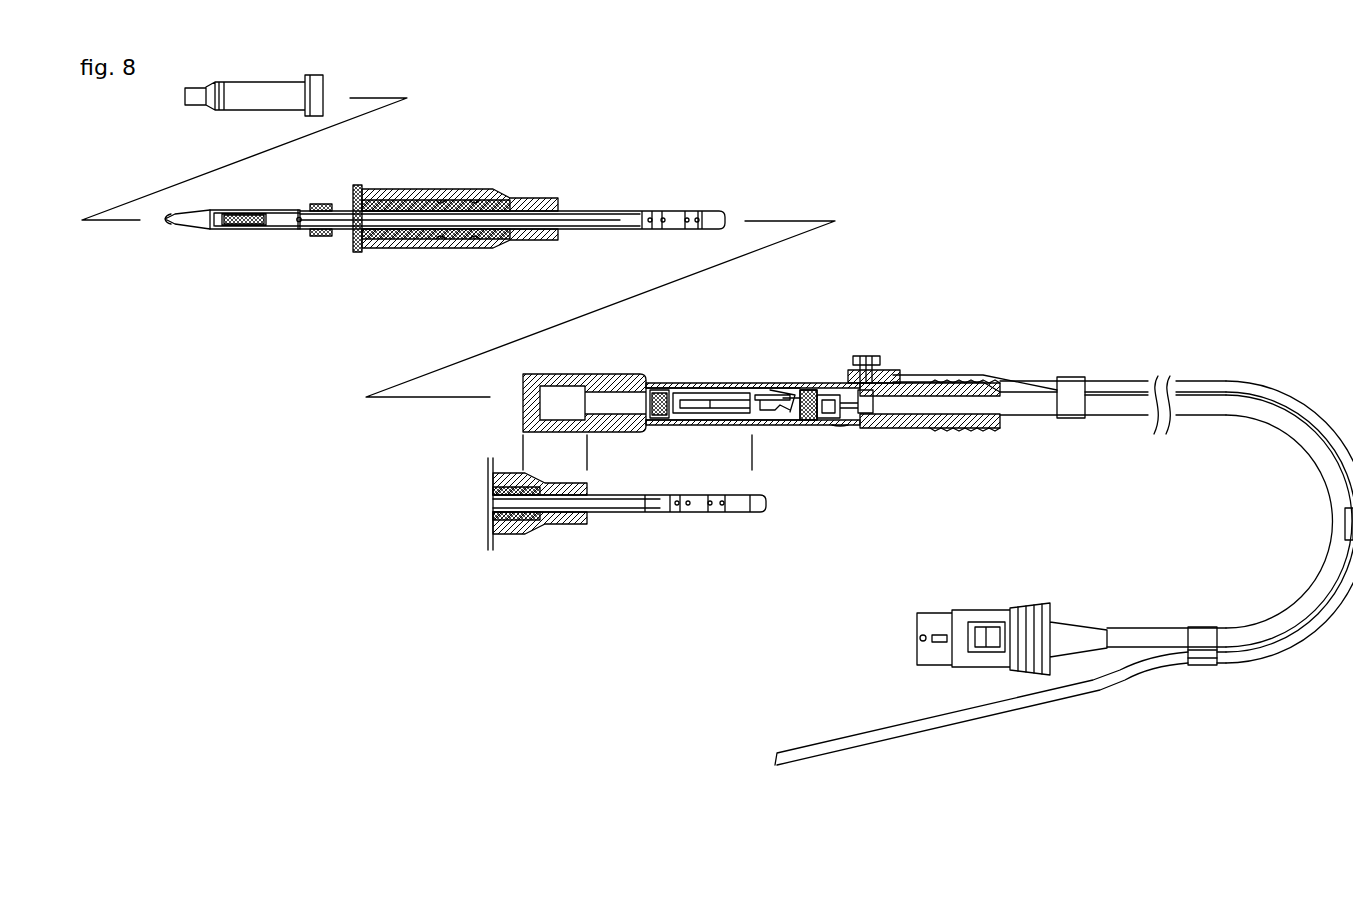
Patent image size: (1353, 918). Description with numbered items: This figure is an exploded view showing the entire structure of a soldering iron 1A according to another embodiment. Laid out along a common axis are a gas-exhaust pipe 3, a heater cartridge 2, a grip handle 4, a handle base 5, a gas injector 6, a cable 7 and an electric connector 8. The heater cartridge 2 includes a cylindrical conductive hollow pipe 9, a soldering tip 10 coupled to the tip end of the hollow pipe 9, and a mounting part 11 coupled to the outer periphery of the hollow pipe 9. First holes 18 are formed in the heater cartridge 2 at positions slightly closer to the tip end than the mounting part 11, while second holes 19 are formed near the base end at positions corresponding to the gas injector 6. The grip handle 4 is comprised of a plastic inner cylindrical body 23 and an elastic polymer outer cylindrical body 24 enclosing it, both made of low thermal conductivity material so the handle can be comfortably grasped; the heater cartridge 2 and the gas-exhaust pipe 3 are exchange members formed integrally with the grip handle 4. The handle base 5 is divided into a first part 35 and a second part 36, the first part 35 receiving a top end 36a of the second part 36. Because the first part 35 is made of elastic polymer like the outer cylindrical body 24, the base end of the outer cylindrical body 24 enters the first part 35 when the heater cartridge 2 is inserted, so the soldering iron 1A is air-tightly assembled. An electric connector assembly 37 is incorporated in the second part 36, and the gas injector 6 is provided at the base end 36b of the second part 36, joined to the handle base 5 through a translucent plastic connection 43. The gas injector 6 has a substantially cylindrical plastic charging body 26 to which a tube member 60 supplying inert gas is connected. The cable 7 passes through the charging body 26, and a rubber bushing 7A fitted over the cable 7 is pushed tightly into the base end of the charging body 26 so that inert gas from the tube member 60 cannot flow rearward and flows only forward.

The soldering iron 1A is at (258, 461).
The heater cartridge 2 is at (561, 141).
The gas-exhaust pipe 3 is at (266, 79).
The grip handle 4 is at (411, 179).
The handle base 5 is at (765, 303).
The gas injector 6 is at (878, 362).
The cable 7 is at (1110, 410).
The rubber bushing 7A is at (978, 429).
The electric connector 8 is at (989, 749).
The hollow pipe 9 is at (604, 252).
The soldering tip 10 is at (168, 225).
The mounting part 11 is at (317, 203).
The first holes 18 is at (298, 231).
The second holes 19 is at (700, 195).
The inner cylindrical body 23 is at (358, 253).
The outer cylindrical body 24 is at (440, 196).
The charging body 26 is at (912, 429).
The first part 35 is at (573, 374).
The second part 36 is at (719, 378).
The top end 36a is at (656, 388).
The base end 36b is at (790, 386).
The electric connector assembly 37 is at (705, 420).
The connection 43 is at (820, 426).
The tube member 60 is at (1025, 378).